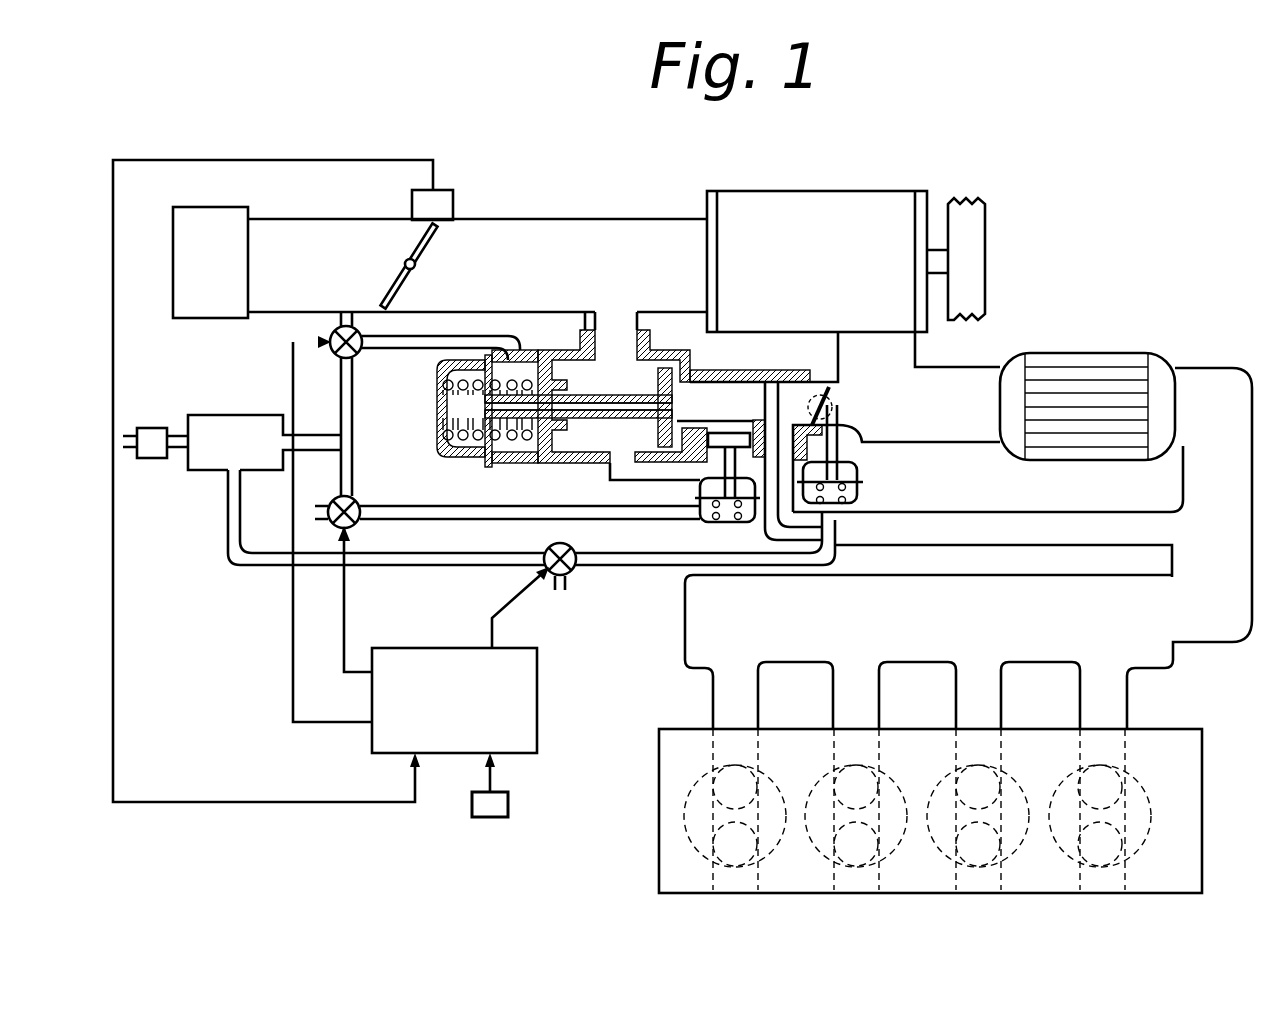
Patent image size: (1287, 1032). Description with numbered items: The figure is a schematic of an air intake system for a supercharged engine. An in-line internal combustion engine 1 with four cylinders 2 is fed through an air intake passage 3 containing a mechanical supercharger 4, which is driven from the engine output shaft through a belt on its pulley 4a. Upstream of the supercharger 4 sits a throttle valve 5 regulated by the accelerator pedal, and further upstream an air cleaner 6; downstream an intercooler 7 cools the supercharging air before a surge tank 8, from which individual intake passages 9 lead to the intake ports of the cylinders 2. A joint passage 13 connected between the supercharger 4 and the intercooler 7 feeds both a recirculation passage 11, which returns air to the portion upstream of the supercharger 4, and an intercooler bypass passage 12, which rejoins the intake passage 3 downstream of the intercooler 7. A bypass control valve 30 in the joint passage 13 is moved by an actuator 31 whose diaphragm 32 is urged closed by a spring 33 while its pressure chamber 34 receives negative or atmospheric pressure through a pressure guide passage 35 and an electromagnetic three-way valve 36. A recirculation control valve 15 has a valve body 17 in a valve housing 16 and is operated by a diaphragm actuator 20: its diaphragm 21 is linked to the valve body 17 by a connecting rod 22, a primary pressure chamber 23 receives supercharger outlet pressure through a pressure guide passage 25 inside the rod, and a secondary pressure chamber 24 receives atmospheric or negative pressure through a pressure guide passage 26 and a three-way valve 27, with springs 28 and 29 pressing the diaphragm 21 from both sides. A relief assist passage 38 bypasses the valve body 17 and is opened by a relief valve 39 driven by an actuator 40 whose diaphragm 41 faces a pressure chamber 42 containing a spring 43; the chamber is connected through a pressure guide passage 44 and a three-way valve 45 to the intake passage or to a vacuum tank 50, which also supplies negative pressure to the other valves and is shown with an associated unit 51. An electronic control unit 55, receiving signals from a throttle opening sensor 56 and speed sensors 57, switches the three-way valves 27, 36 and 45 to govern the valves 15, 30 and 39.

The internal combustion engine 1 is at (1210, 770).
The cylinders 2 is at (764, 772).
The air intake passage 3 is at (276, 316).
The supercharger 4 is at (862, 190).
The pulley 4a is at (968, 198).
The throttle valve 5 is at (443, 239).
The air cleaner 6 is at (190, 318).
The intercooler 7 is at (1081, 353).
The surge tank 8 is at (1150, 576).
The individual intake passages 9 is at (1127, 697).
The recirculation passage 11 is at (588, 324).
The intercooler bypass passage 12 is at (986, 512).
The joint passage 13 is at (820, 374).
The recirculation control valve 15 is at (680, 398).
The valve housing 16 is at (663, 348).
The valve body 17 is at (654, 388).
The diaphragm actuator 20 is at (460, 386).
The diaphragm 21 is at (488, 466).
The connecting rod 22 is at (598, 394).
The primary pressure chamber 23 is at (436, 405).
The secondary pressure chamber 24 is at (516, 444).
The pressure guide passage 25 is at (612, 419).
The pressure guide passage 26 is at (451, 333).
The electromagnetic three-way valve 27 is at (335, 328).
The spring 28 is at (458, 442).
The spring 29 is at (529, 372).
The bypass control valve 30 is at (836, 390).
The actuator 31 is at (874, 505).
The diaphragm 32 is at (858, 472).
The spring 33 is at (840, 520).
The pressure chamber 34 is at (864, 490).
The pressure guide passage 35 is at (228, 561).
The electromagnetic three-way valve 36 is at (574, 574).
The relief assist passage 38 is at (630, 482).
The relief valve 39 is at (754, 434).
The actuator 40 is at (710, 504).
The diaphragm 41 is at (762, 491).
The pressure chamber 42 is at (750, 513).
The spring 43 is at (726, 522).
The pressure guide passage 44 is at (442, 521).
The electromagnetic three-way valve 45 is at (362, 522).
The vacuum tank 50 is at (200, 470).
The sensor 51 is at (150, 458).
The electronic control unit 55 is at (538, 700).
The throttle opening sensor 56 is at (454, 200).
The speed sensors 57 is at (509, 805).